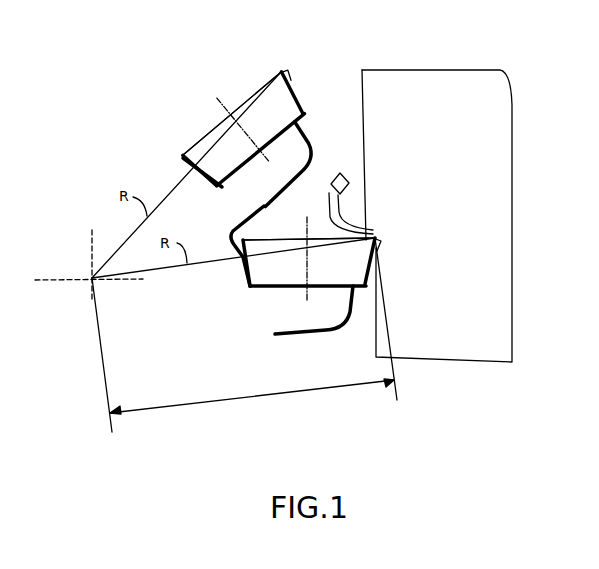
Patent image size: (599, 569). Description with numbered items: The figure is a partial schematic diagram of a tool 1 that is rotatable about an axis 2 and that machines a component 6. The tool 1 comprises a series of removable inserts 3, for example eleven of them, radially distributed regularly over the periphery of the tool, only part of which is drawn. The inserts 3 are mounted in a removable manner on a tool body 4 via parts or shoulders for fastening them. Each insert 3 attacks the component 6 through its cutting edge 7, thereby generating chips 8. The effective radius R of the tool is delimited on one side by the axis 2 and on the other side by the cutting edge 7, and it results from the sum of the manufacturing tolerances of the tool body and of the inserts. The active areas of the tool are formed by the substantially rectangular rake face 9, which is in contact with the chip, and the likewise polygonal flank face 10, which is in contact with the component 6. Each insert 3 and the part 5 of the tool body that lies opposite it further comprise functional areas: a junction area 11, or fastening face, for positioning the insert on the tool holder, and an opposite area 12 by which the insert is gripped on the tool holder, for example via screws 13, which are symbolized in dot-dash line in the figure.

The tool 1 is at (93, 200).
The axis 2 is at (89, 283).
The removable insert 3 is at (286, 88).
The tool body 4 is at (171, 309).
The part of the tool body 5 is at (311, 143).
The component 6 is at (448, 197).
The cutting edge 7 is at (279, 68).
The chips 8 is at (337, 172).
The rake face 9 is at (267, 73).
The flank face 10 is at (301, 96).
The junction area 11 is at (257, 165).
The opposite area 12 is at (215, 126).
The screws 13 is at (230, 108).